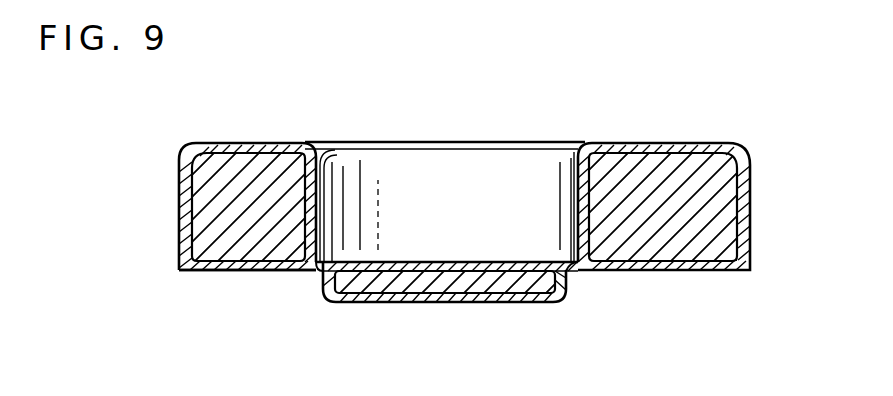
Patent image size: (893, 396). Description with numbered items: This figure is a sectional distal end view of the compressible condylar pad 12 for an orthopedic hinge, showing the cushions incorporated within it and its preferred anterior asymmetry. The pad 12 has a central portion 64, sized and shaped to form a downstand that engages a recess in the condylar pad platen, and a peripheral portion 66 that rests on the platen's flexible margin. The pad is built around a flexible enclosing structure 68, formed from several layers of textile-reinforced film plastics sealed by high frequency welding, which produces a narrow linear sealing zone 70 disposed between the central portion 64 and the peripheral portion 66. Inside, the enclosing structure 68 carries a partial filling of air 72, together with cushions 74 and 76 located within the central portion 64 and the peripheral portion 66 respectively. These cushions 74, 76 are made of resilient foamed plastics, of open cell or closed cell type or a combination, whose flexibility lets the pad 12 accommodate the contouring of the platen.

The compressible condylar pad 12 is at (205, 205).
The central portion 64 is at (410, 303).
The peripheral portion 66 is at (205, 270).
The flexible enclosing structure 68 is at (213, 142).
The narrow linear sealing zone 70 is at (322, 272).
The partial filling of air 72 is at (332, 262).
The cushion 74 is at (462, 285).
The cushion 76 is at (205, 175).